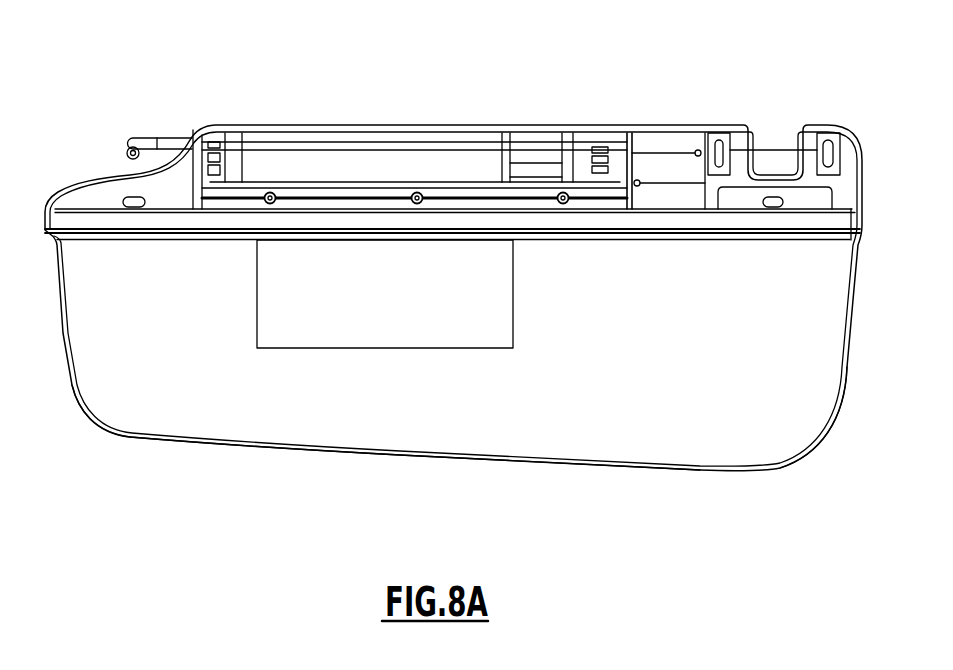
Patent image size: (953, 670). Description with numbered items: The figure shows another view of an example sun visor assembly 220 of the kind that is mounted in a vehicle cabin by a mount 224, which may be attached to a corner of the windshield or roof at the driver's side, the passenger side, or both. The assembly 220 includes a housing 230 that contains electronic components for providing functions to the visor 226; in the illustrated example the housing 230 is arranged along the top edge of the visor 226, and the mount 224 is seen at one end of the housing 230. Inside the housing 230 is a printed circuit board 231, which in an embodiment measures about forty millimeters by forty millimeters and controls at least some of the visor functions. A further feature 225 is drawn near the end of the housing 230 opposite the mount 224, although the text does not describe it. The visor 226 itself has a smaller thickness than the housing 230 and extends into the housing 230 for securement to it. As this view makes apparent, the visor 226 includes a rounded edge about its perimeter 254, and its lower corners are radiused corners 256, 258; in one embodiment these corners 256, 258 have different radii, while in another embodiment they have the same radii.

The sun visor assembly 220 is at (418, 96).
The mount 224 is at (150, 137).
The end mounting slot 225 is at (781, 134).
The visor 226 is at (816, 347).
The housing 230 is at (696, 122).
The printed circuit board 231 is at (658, 137).
The perimeter 254 is at (265, 453).
The radiused corner 256 is at (821, 453).
The radiused corner 258 is at (98, 426).